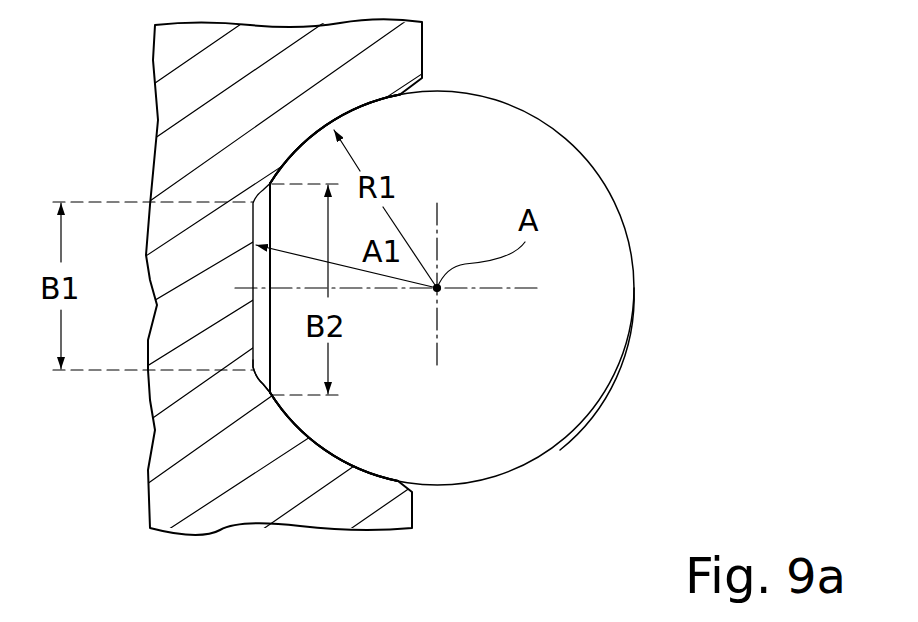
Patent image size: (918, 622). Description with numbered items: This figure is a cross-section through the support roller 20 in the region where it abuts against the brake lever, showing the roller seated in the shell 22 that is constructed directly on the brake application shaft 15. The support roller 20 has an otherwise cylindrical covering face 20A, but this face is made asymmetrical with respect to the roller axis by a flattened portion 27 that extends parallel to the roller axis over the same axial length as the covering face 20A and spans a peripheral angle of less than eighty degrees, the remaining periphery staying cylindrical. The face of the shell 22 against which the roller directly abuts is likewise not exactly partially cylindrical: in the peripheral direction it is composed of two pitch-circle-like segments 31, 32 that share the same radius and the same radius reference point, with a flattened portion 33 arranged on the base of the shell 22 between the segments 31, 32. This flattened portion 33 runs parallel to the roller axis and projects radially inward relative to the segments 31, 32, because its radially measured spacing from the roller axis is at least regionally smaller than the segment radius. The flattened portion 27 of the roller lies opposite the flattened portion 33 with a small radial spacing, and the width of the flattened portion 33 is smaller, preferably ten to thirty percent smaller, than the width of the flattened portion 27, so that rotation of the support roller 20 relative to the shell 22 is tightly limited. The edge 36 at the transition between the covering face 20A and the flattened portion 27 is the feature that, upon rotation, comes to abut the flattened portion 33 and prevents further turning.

The brake application shaft 15 is at (190, 465).
The support roller 20 is at (582, 148).
The cylindrical covering face 20A is at (595, 413).
The shell 22 is at (346, 410).
The flattened portion 27 is at (270, 322).
The segment 31 is at (347, 115).
The segment 32 is at (333, 454).
The flattened portion 33 is at (253, 340).
The edge 36 is at (265, 393).